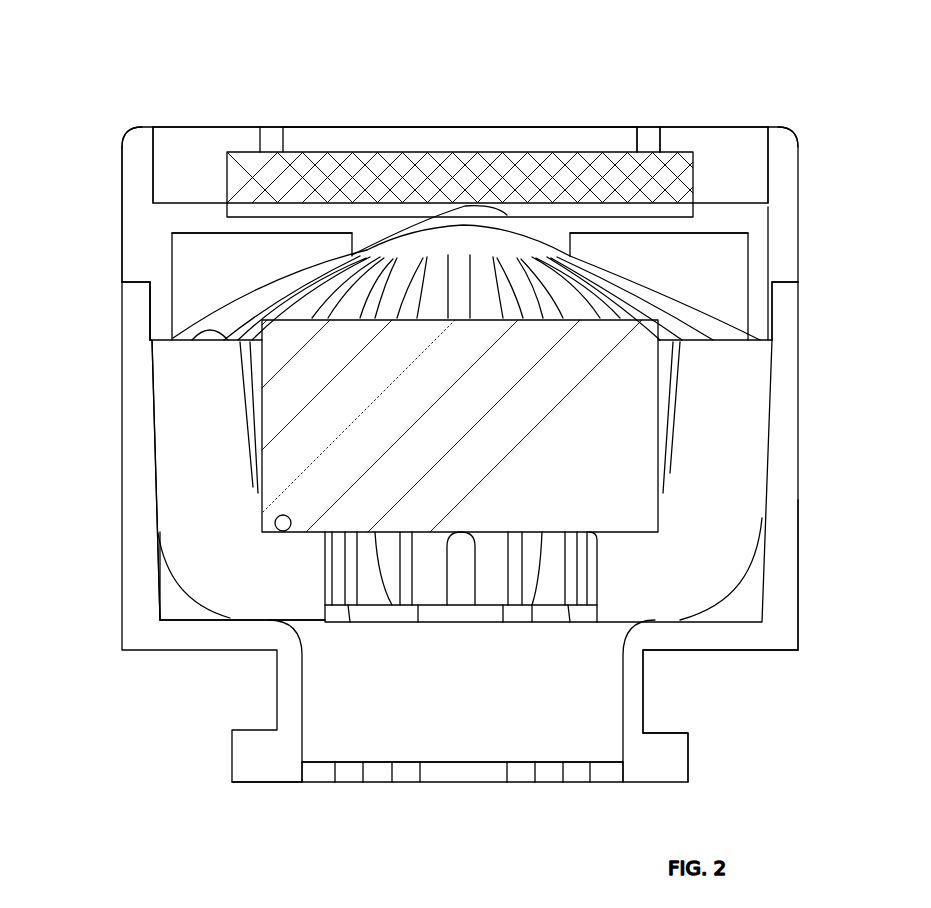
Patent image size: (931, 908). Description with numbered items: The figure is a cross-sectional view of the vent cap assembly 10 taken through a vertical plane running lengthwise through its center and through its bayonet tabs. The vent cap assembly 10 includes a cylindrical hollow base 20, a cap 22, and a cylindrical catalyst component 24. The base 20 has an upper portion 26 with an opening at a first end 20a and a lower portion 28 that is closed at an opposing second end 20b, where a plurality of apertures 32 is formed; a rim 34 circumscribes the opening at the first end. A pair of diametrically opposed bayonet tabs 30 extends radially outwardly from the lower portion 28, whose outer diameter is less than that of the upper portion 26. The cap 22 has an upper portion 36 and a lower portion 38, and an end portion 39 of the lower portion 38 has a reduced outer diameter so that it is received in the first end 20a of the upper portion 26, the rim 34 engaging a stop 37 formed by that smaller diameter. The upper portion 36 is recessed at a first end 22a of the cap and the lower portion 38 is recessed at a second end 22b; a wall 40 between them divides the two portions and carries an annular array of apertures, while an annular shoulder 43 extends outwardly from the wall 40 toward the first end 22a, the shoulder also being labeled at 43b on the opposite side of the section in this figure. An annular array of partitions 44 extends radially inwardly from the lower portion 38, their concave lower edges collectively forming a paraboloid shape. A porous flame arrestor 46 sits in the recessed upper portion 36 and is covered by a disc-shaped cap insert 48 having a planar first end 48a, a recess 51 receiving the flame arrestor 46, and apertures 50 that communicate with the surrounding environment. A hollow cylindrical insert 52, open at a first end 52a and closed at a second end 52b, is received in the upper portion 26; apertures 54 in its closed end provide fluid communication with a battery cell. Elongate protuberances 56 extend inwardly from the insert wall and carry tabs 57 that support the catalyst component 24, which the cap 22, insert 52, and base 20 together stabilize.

The vent cap assembly 10 is at (86, 70).
The base 20 is at (803, 434).
The first end of the base 20a is at (780, 126).
The second end of the base 20b is at (303, 783).
The cap 22 is at (120, 198).
The first end of the cap 22a is at (124, 137).
The second end of the cap 22b is at (120, 377).
The catalyst component 24 is at (458, 433).
The upper portion of the base 26 is at (800, 598).
The lower portion of the base 28 is at (645, 695).
The bayonet tabs 30 is at (690, 758).
The apertures 32 is at (580, 783).
The rim 34 is at (150, 318).
The upper portion of the cap 36 is at (827, 127).
The stop 37 is at (780, 283).
The lower portion of the cap 38 is at (827, 207).
The end portion 39 is at (105, 283).
The wall 40 is at (247, 227).
The annular shoulder 43 is at (184, 225).
The cavity second side 43b is at (737, 209).
The partitions 44 is at (409, 263).
The flame arrestor 46 is at (447, 183).
The cap insert 48 is at (721, 150).
The first end of the cap insert 48a is at (550, 126).
The apertures 50 is at (262, 137).
The recess 51 is at (584, 155).
The insert 52 is at (743, 388).
The first end of the insert 52a is at (120, 405).
The second end of the insert 52b is at (309, 622).
The apertures 54 is at (402, 622).
The protuberances 56 is at (210, 530).
The tabs 57 is at (283, 530).